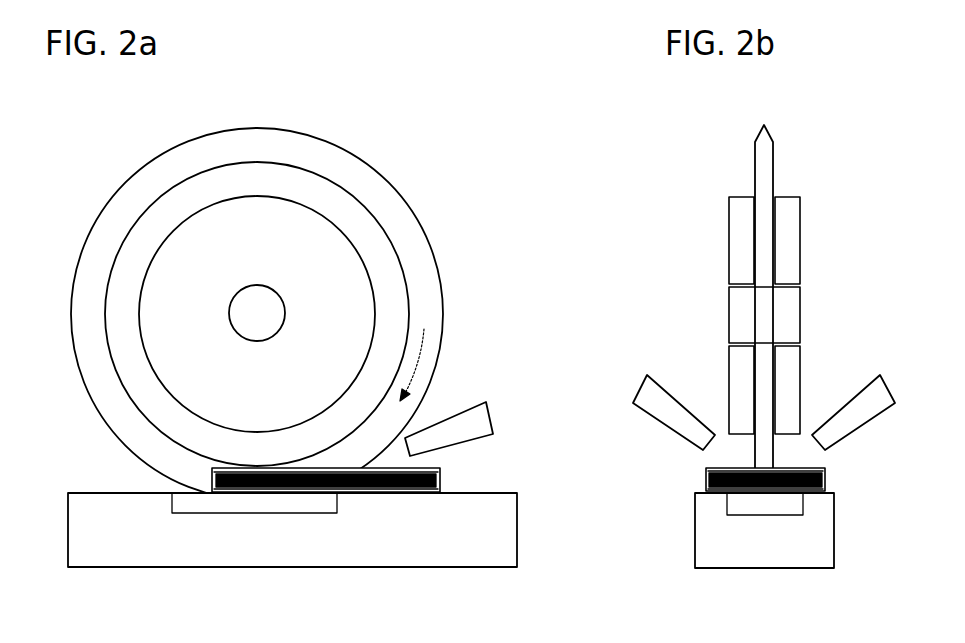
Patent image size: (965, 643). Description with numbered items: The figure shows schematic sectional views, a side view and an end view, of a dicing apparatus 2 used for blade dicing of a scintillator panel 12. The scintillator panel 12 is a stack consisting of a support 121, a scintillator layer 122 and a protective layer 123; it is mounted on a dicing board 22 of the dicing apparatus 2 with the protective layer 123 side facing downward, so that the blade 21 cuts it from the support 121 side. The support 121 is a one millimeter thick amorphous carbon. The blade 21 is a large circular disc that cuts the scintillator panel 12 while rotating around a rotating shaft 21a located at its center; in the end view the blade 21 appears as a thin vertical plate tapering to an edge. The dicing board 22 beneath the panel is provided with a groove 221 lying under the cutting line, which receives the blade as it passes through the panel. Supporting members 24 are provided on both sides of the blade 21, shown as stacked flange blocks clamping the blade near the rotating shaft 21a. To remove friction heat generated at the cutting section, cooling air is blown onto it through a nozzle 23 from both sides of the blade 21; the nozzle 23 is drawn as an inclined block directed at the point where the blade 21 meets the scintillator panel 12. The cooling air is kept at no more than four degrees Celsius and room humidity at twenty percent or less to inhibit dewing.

In FIG. 2a, the dicing apparatus 2 is at (256, 103).
In FIG. 2a, the blade 21 is at (402, 223).
In FIG. 2b, the blade 21 is at (757, 140).
In FIG. 2a, the rotating shaft 21a is at (260, 313).
In FIG. 2b, the rotating shaft 21a is at (740, 312).
In FIG. 2a, the nozzle 23 is at (495, 418).
In FIG. 2b, the nozzle 23 is at (575, 386).
In FIG. 2b, the supporting members 24 is at (762, 200).
In FIG. 2a, the scintillator panel 12 is at (442, 468).
In FIG. 2b, the scintillator panel 12 is at (827, 468).
In FIG. 2a, the support 121 is at (212, 470).
In FIG. 2a, the scintillator layer 122 is at (212, 480).
In FIG. 2a, the protective layer 123 is at (212, 490).
In FIG. 2a, the dicing board 22 is at (197, 540).
In FIG. 2b, the dicing board 22 is at (733, 553).
In FIG. 2a, the groove 221 is at (283, 500).
In FIG. 2b, the groove 221 is at (790, 520).